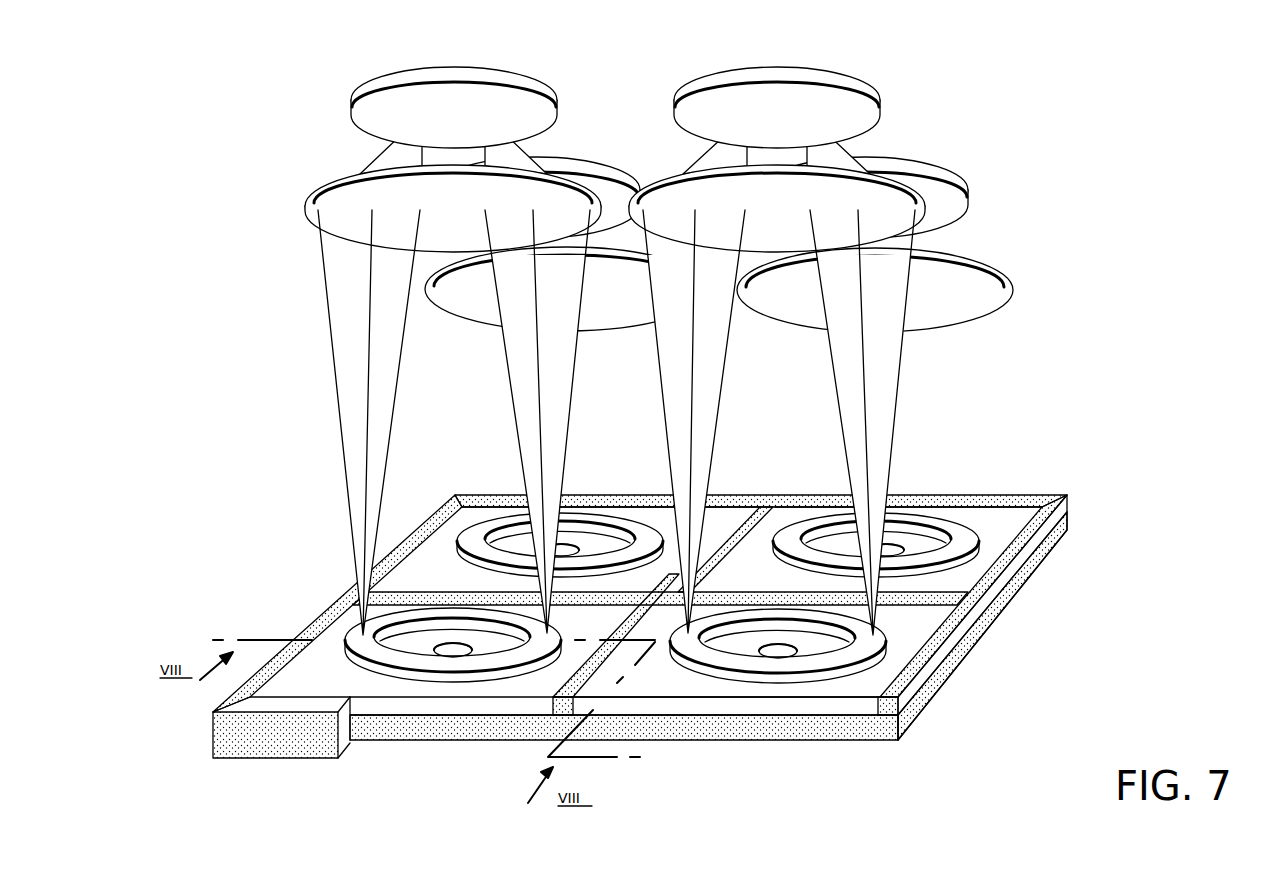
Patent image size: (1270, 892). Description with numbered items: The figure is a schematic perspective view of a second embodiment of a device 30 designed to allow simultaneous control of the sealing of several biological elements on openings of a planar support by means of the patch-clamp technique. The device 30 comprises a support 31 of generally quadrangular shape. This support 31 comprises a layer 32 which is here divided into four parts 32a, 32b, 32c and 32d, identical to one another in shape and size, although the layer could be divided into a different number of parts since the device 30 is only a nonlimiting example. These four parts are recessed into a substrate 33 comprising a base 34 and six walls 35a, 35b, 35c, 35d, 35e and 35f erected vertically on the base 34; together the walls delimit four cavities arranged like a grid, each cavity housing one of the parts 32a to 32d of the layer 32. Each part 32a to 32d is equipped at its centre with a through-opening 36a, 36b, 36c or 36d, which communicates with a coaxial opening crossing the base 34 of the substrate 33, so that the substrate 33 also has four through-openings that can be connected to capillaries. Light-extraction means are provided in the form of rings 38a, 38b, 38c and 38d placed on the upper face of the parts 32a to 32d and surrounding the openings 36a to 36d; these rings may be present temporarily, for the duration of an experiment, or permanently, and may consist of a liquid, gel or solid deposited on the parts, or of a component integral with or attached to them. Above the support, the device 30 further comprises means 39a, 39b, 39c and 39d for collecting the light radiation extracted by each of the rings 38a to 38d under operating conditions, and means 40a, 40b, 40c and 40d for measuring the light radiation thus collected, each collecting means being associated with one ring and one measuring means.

The device 30 is at (1058, 104).
The support 31 is at (982, 730).
The layer 32 is at (863, 708).
The part of the layer 32a is at (300, 682).
The part of the layer 32b is at (930, 620).
The part of the layer 32c is at (1013, 520).
The part of the layer 32d is at (462, 513).
The substrate 33 is at (666, 586).
The base 34 is at (833, 740).
The wall 35a is at (337, 608).
The wall 35b is at (802, 502).
The wall 35c is at (1028, 552).
The wall 35d is at (328, 707).
The wall 35e is at (422, 598).
The wall 35f is at (735, 535).
The through-opening 36a is at (452, 655).
The through-opening 36b is at (782, 655).
The through-opening 36c is at (915, 540).
The through-opening 36d is at (572, 548).
The ring 38a is at (407, 697).
The ring 38b is at (778, 707).
The ring 38c is at (922, 502).
The ring 38d is at (560, 502).
The means for collecting the light radiation 39a is at (328, 187).
The means for collecting the light radiation 39b is at (887, 213).
The means for collecting the light radiation 39c is at (978, 305).
The means for collecting the light radiation 39d is at (472, 305).
The means for measuring the light radiation 40a is at (367, 117).
The means for measuring the light radiation 40b is at (863, 117).
The means for measuring the light radiation 40c is at (955, 178).
The means for measuring the light radiation 40d is at (612, 166).